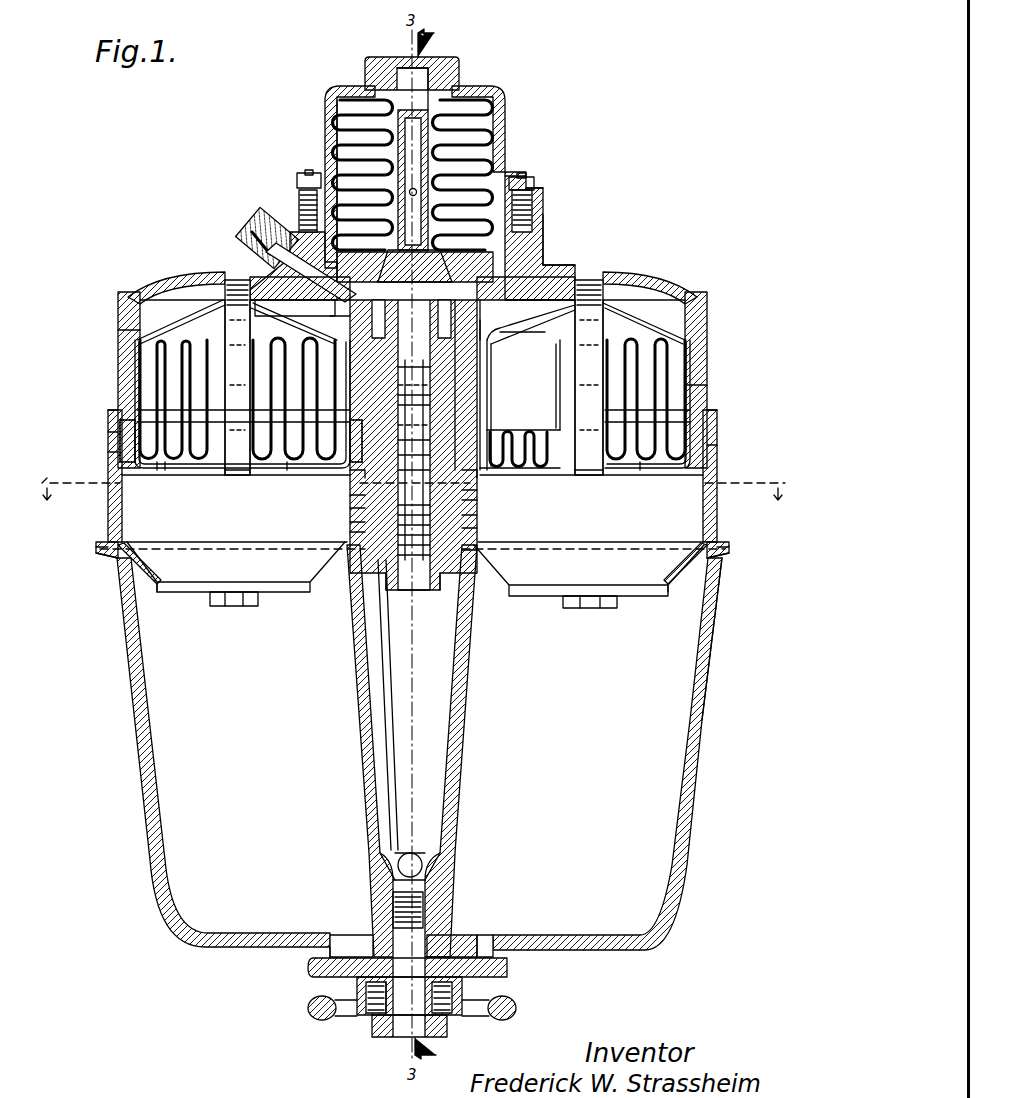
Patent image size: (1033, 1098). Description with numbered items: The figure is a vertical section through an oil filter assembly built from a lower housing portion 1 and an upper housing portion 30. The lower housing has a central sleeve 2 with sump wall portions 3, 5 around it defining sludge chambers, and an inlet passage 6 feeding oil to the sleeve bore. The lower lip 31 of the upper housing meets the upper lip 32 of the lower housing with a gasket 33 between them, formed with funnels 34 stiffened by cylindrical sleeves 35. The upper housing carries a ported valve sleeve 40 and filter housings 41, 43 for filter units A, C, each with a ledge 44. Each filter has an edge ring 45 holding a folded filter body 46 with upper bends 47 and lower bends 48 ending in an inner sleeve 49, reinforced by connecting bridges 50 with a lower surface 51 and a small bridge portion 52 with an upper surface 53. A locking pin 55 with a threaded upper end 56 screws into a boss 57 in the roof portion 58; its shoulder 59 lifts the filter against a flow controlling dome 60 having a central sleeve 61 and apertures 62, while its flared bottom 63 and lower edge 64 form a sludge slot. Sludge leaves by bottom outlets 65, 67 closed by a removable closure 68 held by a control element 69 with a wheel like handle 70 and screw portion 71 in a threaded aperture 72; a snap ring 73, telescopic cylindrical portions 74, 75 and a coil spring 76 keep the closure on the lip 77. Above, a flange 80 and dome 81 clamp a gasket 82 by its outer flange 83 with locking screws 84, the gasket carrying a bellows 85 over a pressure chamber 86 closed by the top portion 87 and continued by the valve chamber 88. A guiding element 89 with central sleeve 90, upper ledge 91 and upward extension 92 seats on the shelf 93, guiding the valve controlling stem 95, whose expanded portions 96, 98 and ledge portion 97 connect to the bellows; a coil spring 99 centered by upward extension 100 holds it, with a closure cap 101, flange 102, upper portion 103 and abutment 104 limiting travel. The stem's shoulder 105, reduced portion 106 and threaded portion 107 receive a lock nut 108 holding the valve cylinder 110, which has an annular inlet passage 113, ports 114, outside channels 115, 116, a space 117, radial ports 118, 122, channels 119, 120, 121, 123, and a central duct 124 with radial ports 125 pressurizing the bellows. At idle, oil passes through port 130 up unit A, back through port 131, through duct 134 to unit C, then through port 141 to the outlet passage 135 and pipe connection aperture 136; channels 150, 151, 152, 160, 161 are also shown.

The lower housing portion 1 is at (702, 712).
The central sleeve 2 is at (398, 690).
The sump wall portion 3 is at (160, 764).
The sump wall portion 5 is at (665, 775).
The inlet passage 6 is at (422, 846).
The upper housing portion 30 is at (108, 499).
The lower lip 31 is at (100, 527).
The upper lip 32 is at (102, 557).
The gasket 33 is at (96, 549).
The funnel 34 is at (133, 562).
The cylindrical sleeve 35 is at (145, 578).
The valve sleeve 40 is at (365, 354).
The filter housing 41 is at (120, 352).
The filter housing 43 is at (710, 352).
The ledge 44 is at (108, 412).
The edge ring 45 is at (108, 432).
The filter body 46 is at (118, 330).
The upper bends 47 is at (170, 343).
The lower bends 48 is at (182, 470).
The inner sleeve 49 is at (245, 466).
The connecting bridges 50 is at (268, 380).
The lower surface 51 is at (160, 472).
The bridge portion 52 is at (108, 452).
The upper surface 53 is at (165, 425).
The locking pin 55 is at (216, 522).
The screw threaded upper end 56 is at (237, 290).
The boss 57 is at (230, 283).
The roof portion 58 is at (185, 275).
The shoulder 59 is at (238, 472).
The flow controlling dome 60 is at (125, 295).
The central sleeve 61 is at (225, 312).
The apertures 62 is at (222, 318).
The flared bottom 63 is at (210, 568).
The lower edge 64 is at (225, 600).
The bottom outlet 65 is at (352, 945).
The bottom outlet 67 is at (482, 942).
The removable closure 68 is at (312, 970).
The control element 69 is at (405, 1025).
The wheel like handle 70 is at (516, 1010).
The screw portion 71 is at (428, 906).
The threaded aperture 72 is at (378, 866).
The snap ring 73 is at (385, 920).
The telescopic cylindrical portion 74 is at (362, 996).
The telescopic cylindrical portion 75 is at (380, 1012).
The coil spring 76 is at (462, 995).
The lip 77 is at (320, 952).
The flange 80 is at (548, 228).
The dome 81 is at (330, 95).
The gasket 82 is at (330, 112).
The outer flange 83 is at (540, 202).
The locking screws 84 is at (300, 174).
The bellows 85 is at (500, 102).
The pressure chamber 86 is at (548, 243).
The top portion 87 is at (512, 300).
The valve chamber 88 is at (340, 340).
The guiding element 89 is at (535, 282).
The central sleeve 90 is at (444, 318).
The upper ledge 91 is at (378, 325).
The upward extension 92 is at (352, 278).
The shelf 93 is at (302, 300).
The valve controlling stem 95 is at (440, 333).
The expanded portion 96 is at (550, 262).
The ledge portion 97 is at (335, 325).
The expanded portion 98 is at (300, 216).
The coil spring 99 is at (408, 118).
The upward extension 100 is at (413, 194).
The closure cap 101 is at (390, 60).
The downwardly extending flange 102 is at (345, 133).
The upper portion 103 is at (402, 160).
The upper abutment portion 104 is at (508, 178).
The shoulder 105 is at (470, 500).
The reduced portion 106 is at (480, 515).
The screw threaded portion 107 is at (420, 595).
The lock nut 108 is at (437, 592).
The valve cylinder 110 is at (352, 500).
The annular oil inlet passage 113 is at (355, 620).
The ports 114 is at (475, 528).
The outside channel 115 is at (355, 508).
The outside channel 116 is at (355, 532).
The space 117 is at (492, 376).
The radial ports 118 is at (412, 445).
The circumferential channel 119 is at (520, 440).
The intermediate circumferential channel 120 is at (492, 426).
The higher circumferential channel 121 is at (492, 392).
The radial ports 122 is at (412, 398).
The upper circumferential channel 123 is at (484, 336).
The central longitudinal duct 124 is at (410, 592).
The radial ports 125 is at (412, 265).
The port 130 is at (360, 522).
The port 131 is at (285, 402).
The duct 134 is at (470, 550).
The outlet passage 135 is at (290, 254).
The pipe connection aperture 136 is at (252, 236).
The port 141 is at (492, 362).
The passage 150 is at (480, 490).
The chamber top 151 is at (530, 420).
The plate 152 is at (285, 422).
The passage 160 is at (350, 480).
The passage 161 is at (478, 480).
The filter unit A is at (130, 269).
The filter unit C is at (707, 283).